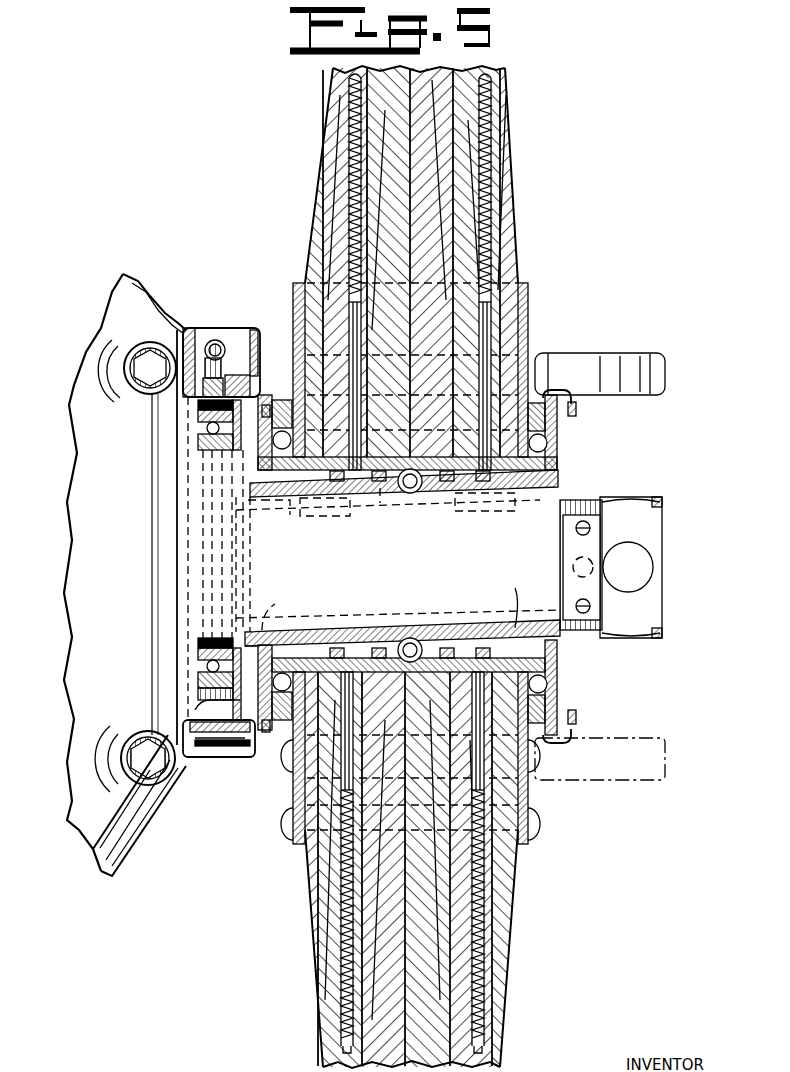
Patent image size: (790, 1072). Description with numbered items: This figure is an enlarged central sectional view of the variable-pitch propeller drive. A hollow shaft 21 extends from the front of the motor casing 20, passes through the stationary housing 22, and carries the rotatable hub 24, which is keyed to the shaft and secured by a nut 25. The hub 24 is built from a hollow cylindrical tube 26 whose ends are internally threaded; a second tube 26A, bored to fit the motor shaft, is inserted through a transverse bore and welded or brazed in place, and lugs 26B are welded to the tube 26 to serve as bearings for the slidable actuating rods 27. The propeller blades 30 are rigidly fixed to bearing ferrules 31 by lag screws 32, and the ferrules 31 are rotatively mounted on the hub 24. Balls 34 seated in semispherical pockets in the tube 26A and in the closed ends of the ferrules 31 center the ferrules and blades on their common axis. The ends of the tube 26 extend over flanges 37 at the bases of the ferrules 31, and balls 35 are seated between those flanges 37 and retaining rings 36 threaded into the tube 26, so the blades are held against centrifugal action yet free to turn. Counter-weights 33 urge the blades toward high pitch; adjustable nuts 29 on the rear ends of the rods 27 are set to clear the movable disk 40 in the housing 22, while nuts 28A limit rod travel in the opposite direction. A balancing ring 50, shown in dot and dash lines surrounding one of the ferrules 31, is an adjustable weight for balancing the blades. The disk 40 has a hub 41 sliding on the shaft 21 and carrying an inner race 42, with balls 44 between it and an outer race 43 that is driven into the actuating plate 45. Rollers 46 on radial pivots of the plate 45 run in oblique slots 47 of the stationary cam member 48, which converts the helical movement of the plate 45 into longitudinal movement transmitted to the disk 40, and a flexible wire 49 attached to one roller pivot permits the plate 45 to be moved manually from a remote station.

The motor casing 20 is at (80, 544).
The hollow shaft 21 is at (398, 564).
The stationary housing 22 is at (204, 326).
The rotatable hub 24 is at (560, 671).
The nut 25 is at (664, 515).
The hollow cylindrical tube 26 is at (560, 484).
The tube 26A is at (512, 594).
The lugs 26B is at (322, 514).
The actuating rods 27 is at (382, 505).
The nuts 28A is at (291, 516).
The adjustable nuts 29 is at (259, 512).
The propeller blades 30 is at (520, 148).
The bearing ferrules 31 is at (530, 295).
The screw 32 is at (349, 141).
The counter-weights 33 is at (640, 353).
The balls 34 is at (410, 493).
The balls 35 is at (558, 450).
The retaining rings 36 is at (556, 394).
The flanges 37 is at (560, 466).
The movable disk 40 is at (271, 621).
The hub 41 is at (200, 487).
The inner race 42 is at (200, 475).
The outer race 43 is at (207, 452).
The balls 44 is at (207, 462).
The actuating plate 45 is at (207, 435).
The rollers 46 is at (233, 340).
The oblique slots 47 is at (240, 378).
The stationary cam member 48 is at (186, 328).
The flexible wire 49 is at (250, 360).
The boss 50 is at (541, 825).